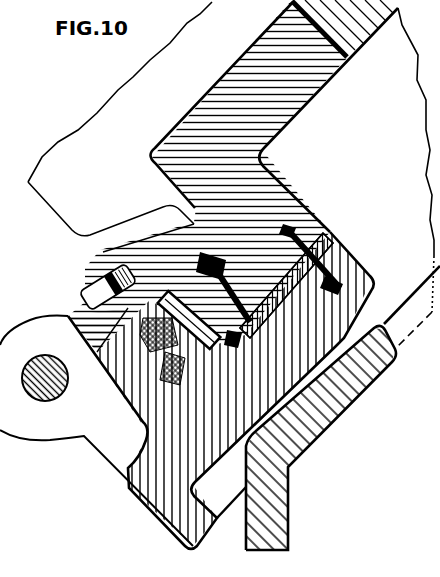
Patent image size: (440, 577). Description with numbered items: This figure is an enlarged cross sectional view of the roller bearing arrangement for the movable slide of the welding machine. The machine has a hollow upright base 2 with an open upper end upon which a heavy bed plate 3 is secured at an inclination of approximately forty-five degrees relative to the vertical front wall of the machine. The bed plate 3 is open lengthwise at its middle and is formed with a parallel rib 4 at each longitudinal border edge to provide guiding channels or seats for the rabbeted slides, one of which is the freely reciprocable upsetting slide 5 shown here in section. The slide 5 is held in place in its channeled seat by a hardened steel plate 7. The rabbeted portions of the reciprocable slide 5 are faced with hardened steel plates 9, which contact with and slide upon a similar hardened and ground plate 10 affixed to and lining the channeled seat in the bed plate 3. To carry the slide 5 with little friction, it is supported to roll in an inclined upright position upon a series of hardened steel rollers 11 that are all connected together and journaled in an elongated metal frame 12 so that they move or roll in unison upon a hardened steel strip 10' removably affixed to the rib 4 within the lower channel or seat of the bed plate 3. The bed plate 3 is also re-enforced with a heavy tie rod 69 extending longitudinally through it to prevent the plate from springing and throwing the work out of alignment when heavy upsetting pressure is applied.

The hollow upright base 2 is at (289, 505).
The bed plate 3 is at (377, 280).
The rib 4 is at (127, 410).
The slide 5 is at (283, 127).
The hardened steel plate 7 is at (190, 237).
The hardened steel plate 9 is at (312, 236).
The hardened and ground plate 10 is at (304, 285).
The hardened steel strip 10' is at (177, 319).
The hardened steel roller 11 is at (100, 283).
The elongated metal frame 12 is at (88, 325).
The tie rod 69 is at (42, 401).